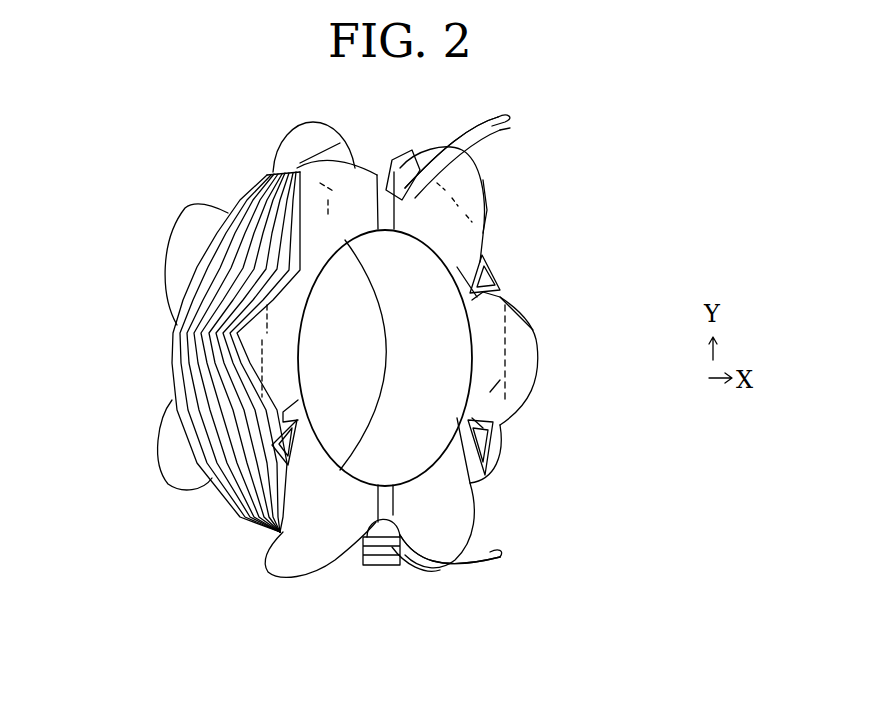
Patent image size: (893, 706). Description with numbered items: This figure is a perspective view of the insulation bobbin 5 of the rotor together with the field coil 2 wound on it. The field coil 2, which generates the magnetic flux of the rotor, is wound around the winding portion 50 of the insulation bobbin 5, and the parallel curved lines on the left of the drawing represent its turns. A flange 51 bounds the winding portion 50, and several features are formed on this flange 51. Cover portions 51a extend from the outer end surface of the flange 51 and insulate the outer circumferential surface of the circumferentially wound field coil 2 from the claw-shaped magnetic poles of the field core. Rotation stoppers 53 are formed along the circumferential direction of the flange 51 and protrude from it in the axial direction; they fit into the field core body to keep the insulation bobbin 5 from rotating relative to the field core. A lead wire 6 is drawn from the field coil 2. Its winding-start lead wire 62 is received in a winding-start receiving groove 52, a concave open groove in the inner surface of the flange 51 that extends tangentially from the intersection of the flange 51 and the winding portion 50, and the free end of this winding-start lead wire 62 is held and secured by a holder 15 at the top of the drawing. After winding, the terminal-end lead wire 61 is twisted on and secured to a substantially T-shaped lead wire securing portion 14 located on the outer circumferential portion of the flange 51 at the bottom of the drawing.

The field coil 2 is at (168, 345).
The insulation bobbin 5 is at (501, 217).
The lead wire 6 is at (522, 377).
The lead wire securing portion 14 is at (380, 562).
The holder 15 is at (400, 165).
The winding portion 50 is at (417, 430).
The flange 51 is at (490, 392).
The cover portion 51a is at (175, 262).
The winding-start receiving groove 52 is at (313, 140).
The rotation stopper 53 is at (500, 268).
The terminal-end lead wire 61 is at (453, 570).
The winding-start lead wire 62 is at (502, 156).